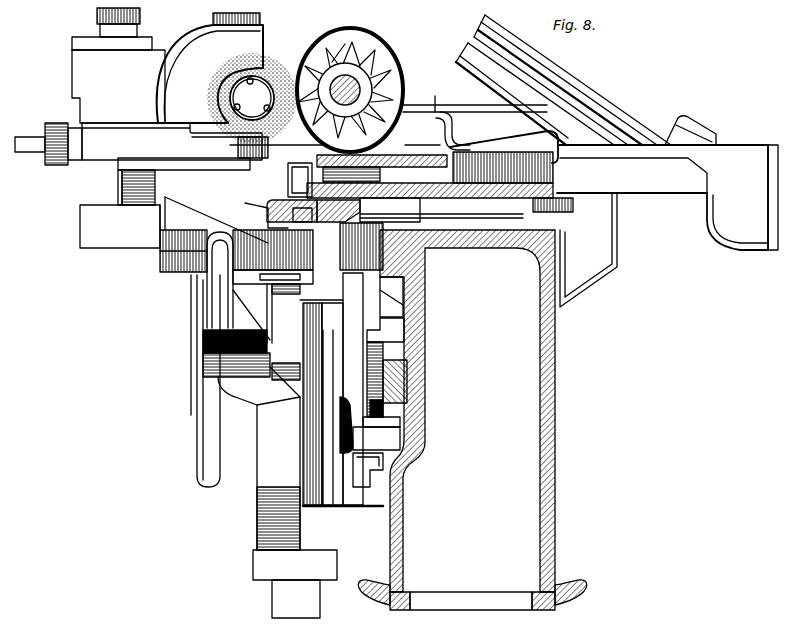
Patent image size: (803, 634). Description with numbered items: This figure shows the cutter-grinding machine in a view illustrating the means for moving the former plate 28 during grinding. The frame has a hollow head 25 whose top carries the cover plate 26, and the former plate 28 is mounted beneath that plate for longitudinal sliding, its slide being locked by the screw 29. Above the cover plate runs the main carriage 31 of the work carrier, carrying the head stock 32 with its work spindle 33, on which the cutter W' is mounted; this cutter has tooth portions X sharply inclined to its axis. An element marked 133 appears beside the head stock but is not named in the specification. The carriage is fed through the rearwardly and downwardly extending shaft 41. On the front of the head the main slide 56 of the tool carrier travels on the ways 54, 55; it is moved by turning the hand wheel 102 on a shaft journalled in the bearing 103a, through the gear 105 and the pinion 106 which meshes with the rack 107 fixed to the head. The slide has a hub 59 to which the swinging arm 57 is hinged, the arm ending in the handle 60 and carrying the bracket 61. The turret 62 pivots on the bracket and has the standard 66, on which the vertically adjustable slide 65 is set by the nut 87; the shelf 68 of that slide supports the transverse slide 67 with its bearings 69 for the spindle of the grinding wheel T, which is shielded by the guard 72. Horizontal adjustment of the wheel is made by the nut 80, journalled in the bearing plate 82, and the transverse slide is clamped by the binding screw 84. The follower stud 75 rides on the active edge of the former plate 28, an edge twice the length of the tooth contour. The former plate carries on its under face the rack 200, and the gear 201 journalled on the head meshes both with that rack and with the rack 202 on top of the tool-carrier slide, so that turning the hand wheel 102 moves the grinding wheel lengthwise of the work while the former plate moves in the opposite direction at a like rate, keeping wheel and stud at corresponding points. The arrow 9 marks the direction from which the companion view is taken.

The nut 87 is at (97, 13).
The guard 72 is at (208, 40).
The slide 65 is at (80, 76).
The bearing plate 82 is at (80, 125).
The nut 80 is at (56, 165).
The transverse slide 67 is at (118, 145).
The shelf 68 is at (124, 180).
The standard 66 is at (88, 227).
The binding screw 84 is at (147, 210).
The turret 62 is at (166, 241).
The bracket 61 is at (166, 258).
The handle 60 is at (217, 256).
The swinging arm 57 is at (220, 367).
The direction arrow 9 is at (150, 410).
The bearing 103a is at (297, 367).
The hand wheel 102 is at (198, 470).
The grinding wheel T is at (268, 60).
The bearings 69 is at (290, 66).
The head stock 32 is at (372, 48).
The cutter W' is at (393, 62).
The work spindle 33 is at (390, 80).
The support 133 is at (436, 92).
The shaft 41 is at (628, 103).
The main carriage 31 is at (657, 185).
The cover plate 26 is at (557, 230).
The hollow head 25 is at (555, 384).
The screw 29 is at (507, 187).
The rack 200 is at (405, 220).
The gear 201 is at (423, 256).
The rack 202 is at (400, 280).
The way 54 is at (404, 318).
The rack 107 is at (404, 345).
The pinion 106 is at (404, 370).
The gear 105 is at (404, 405).
The main slide 56 is at (404, 425).
The way 55 is at (380, 466).
The hub 59 is at (310, 532).
The follower stud 75 is at (292, 208).
The inclined portion X is at (258, 208).
The former plate 28 is at (328, 214).